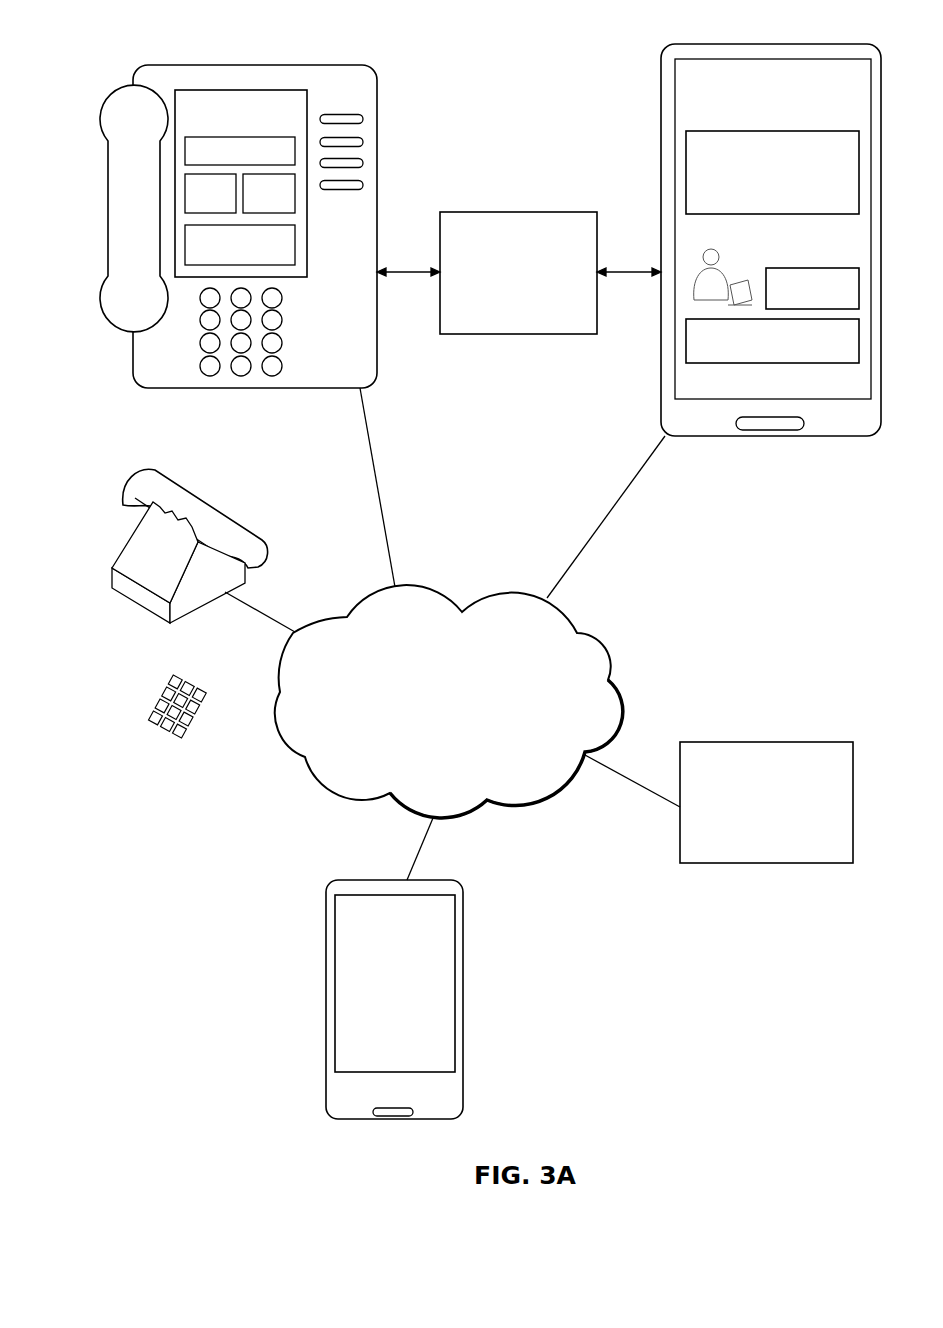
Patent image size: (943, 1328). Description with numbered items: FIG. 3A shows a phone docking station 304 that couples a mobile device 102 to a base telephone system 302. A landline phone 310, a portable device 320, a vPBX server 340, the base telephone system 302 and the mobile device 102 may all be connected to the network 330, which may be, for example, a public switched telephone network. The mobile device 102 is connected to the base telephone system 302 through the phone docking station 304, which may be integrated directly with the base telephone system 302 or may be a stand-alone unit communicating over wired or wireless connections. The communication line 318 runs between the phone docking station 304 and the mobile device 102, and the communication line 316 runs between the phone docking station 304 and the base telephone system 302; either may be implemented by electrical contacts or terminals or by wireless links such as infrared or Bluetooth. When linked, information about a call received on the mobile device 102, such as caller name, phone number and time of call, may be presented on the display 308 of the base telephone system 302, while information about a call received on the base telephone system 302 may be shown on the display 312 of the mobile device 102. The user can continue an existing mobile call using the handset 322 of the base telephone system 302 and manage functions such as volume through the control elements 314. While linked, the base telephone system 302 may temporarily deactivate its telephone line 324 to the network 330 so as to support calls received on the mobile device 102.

The mobile device 102 is at (741, 238).
The base telephone system 302 is at (246, 208).
The phone docking station 304 is at (518, 273).
The display 308 is at (212, 90).
The landline phone 310 is at (213, 505).
The display 312 is at (675, 160).
The control elements 314 is at (363, 144).
The communication line 316 is at (408, 270).
The communication line 318 is at (605, 270).
The portable device 320 is at (462, 885).
The handset 322 is at (100, 122).
The telephone line 324 is at (388, 527).
The network 330 is at (449, 701).
The vPBX server 340 is at (766, 802).